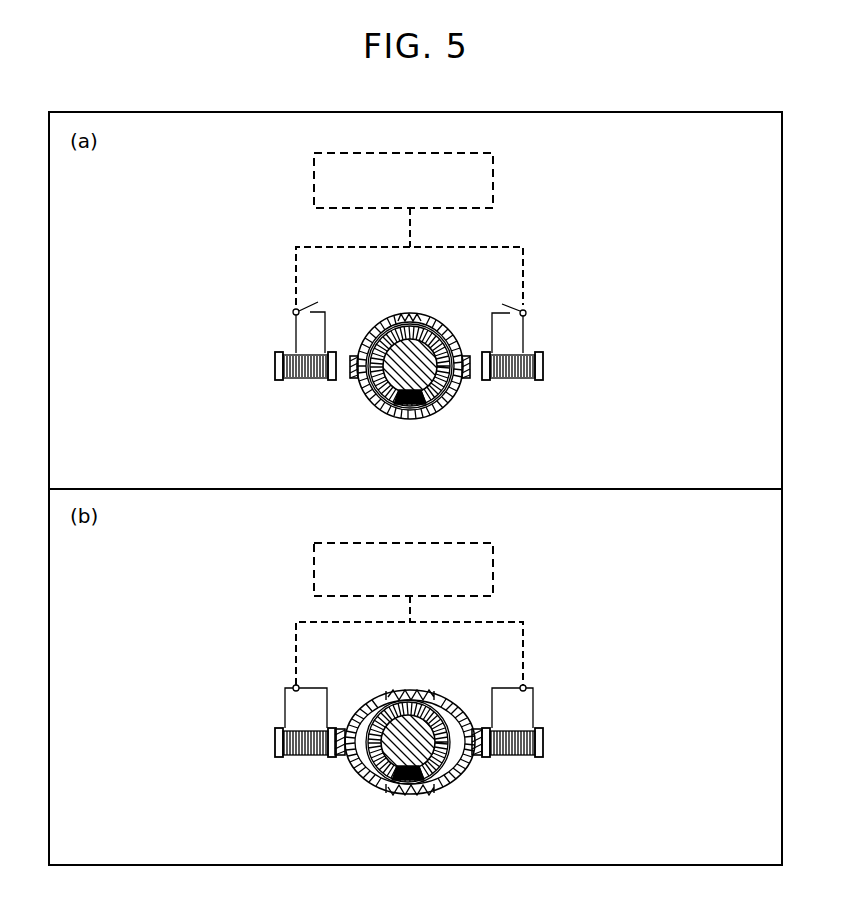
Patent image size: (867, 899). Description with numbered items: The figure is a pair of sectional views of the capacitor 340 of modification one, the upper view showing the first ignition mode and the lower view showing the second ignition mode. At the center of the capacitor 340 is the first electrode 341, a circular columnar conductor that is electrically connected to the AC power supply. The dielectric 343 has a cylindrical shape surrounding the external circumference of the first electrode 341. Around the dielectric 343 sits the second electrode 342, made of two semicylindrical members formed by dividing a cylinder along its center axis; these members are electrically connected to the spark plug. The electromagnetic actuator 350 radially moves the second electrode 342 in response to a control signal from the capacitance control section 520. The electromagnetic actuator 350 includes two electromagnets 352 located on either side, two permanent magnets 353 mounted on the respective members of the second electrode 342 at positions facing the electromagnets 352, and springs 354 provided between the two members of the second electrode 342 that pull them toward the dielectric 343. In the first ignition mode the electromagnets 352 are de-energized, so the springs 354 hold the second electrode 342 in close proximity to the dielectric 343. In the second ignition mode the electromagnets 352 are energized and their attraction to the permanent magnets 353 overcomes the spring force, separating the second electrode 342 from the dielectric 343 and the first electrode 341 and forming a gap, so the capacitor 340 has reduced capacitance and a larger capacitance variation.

The capacitor 340 is at (605, 243).
The first electrode 341 is at (438, 418).
The second electrode 342 is at (362, 393).
The dielectric 343 is at (395, 419).
The electromagnetic actuator 350 is at (289, 287).
The electromagnets 352 is at (275, 368).
The permanent magnets 353 is at (352, 355).
The springs 354 is at (410, 313).
The capacitance control section 520 is at (495, 186).